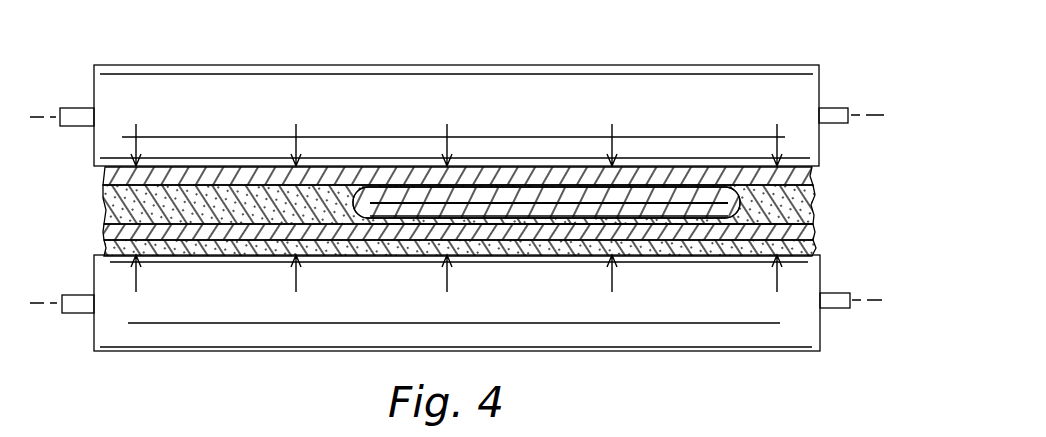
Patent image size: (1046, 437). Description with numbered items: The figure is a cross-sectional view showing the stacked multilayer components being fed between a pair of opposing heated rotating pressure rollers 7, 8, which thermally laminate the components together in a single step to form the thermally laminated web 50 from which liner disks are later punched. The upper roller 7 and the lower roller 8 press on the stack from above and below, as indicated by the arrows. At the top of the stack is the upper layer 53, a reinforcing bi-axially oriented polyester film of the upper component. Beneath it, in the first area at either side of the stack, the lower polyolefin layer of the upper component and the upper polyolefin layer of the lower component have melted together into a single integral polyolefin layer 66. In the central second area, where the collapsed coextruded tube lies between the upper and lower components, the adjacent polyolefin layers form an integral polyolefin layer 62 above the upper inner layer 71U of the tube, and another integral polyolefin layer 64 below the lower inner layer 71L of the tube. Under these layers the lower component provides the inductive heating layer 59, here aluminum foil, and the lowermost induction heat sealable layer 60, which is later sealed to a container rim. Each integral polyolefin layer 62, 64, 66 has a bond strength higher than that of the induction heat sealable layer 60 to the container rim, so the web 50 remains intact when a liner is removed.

The pressure roller 7 is at (107, 65).
The pressure roller 8 is at (114, 357).
The thermally laminated web 50 is at (835, 200).
The upper layer 53 is at (104, 172).
The integral polyolefin layer 66 is at (105, 210).
The inductive heating layer 59 is at (105, 232).
The induction heat sealable layer 60 is at (105, 245).
The integral polyolefin layer 62 is at (689, 186).
The integral polyolefin layer 64 is at (697, 223).
The inner layer 71U is at (508, 200).
The inner layer 71L is at (515, 211).